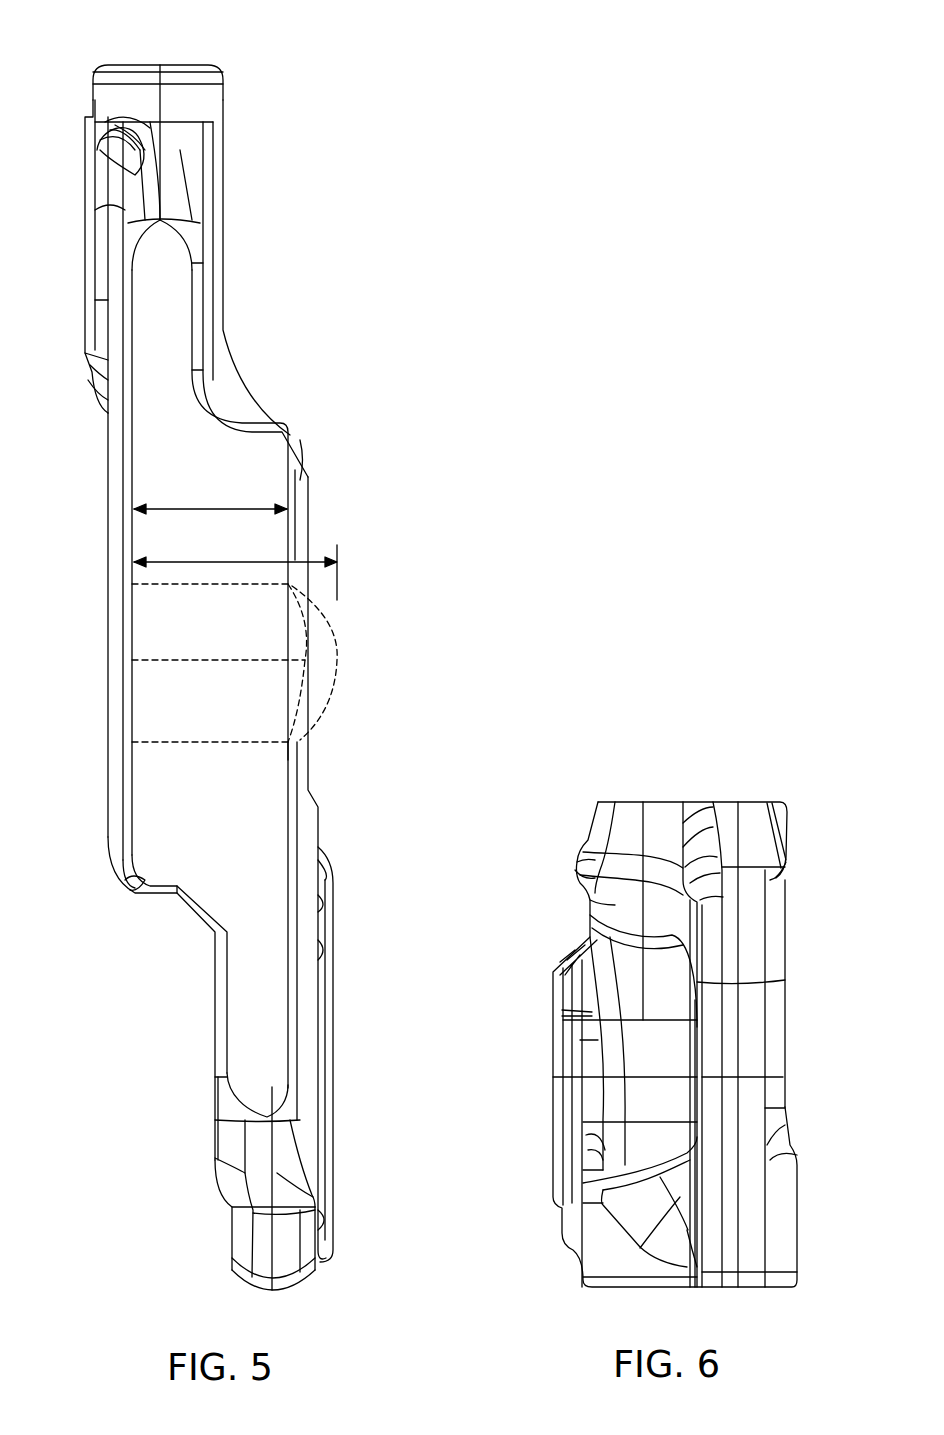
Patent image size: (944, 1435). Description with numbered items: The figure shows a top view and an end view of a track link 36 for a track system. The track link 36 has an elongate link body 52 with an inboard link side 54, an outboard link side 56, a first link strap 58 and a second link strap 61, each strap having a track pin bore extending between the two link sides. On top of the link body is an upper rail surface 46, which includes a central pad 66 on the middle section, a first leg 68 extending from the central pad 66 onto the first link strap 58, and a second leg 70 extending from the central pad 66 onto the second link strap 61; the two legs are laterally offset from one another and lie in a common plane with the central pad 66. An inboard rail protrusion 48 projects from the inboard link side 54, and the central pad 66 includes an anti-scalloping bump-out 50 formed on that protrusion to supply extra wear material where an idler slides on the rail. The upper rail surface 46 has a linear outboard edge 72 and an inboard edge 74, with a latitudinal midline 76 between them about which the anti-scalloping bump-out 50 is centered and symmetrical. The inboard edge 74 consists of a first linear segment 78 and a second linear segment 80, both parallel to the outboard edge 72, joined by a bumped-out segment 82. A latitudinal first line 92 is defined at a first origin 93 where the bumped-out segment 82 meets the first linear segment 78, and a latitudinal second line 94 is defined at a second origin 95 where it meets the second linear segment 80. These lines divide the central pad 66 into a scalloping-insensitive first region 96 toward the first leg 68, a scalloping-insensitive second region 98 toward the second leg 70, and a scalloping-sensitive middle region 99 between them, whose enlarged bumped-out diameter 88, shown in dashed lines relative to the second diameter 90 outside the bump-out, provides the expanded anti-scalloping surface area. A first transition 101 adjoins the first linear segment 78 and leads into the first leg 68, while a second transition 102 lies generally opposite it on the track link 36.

In FIG. 5, the track link 36 is at (308, 152).
In FIG. 5, the upper rail surface 46 is at (152, 758).
In FIG. 6, the upper rail surface 46 is at (697, 800).
In FIG. 5, the inboard rail protrusion 48 is at (320, 612).
In FIG. 6, the inboard rail protrusion 48 is at (795, 848).
In FIG. 5, the anti-scalloping bump-out 50 is at (286, 679).
In FIG. 5, the elongate link body 52 is at (208, 65).
In FIG. 5, the inboard link side 54 is at (347, 930).
In FIG. 5, the outboard link side 56 is at (198, 990).
In FIG. 6, the outboard link side 56 is at (534, 1054).
In FIG. 5, the first link strap 58 is at (150, 140).
In FIG. 5, the second link strap 61 is at (240, 1233).
In FIG. 5, the central pad 66 is at (206, 803).
In FIG. 5, the first leg 68 is at (215, 594).
In FIG. 5, the second leg 70 is at (265, 1170).
In FIG. 5, the outboard edge 72 is at (123, 537).
In FIG. 6, the outboard edge 72 is at (585, 847).
In FIG. 5, the inboard edge 74 is at (297, 765).
In FIG. 5, the latitudinal midline 76 is at (222, 660).
In FIG. 5, the first linear segment 78 is at (300, 470).
In FIG. 5, the second linear segment 80 is at (290, 1015).
In FIG. 5, the bumped-out segment 82 is at (340, 690).
In FIG. 5, the bumped-out diameter 88 is at (233, 562).
In FIG. 5, the second diameter 90 is at (207, 509).
In FIG. 5, the latitudinal first line 92 is at (178, 588).
In FIG. 5, the first origin 93 is at (288, 590).
In FIG. 5, the latitudinal second line 94 is at (178, 745).
In FIG. 5, the second origin 95 is at (286, 740).
In FIG. 5, the scalloping-insensitive first region 96 is at (150, 456).
In FIG. 5, the scalloping-insensitive second region 98 is at (168, 866).
In FIG. 5, the scalloping-sensitive middle region 99 is at (152, 714).
In FIG. 5, the first transition 101 is at (280, 425).
In FIG. 5, the second transition 102 is at (127, 880).